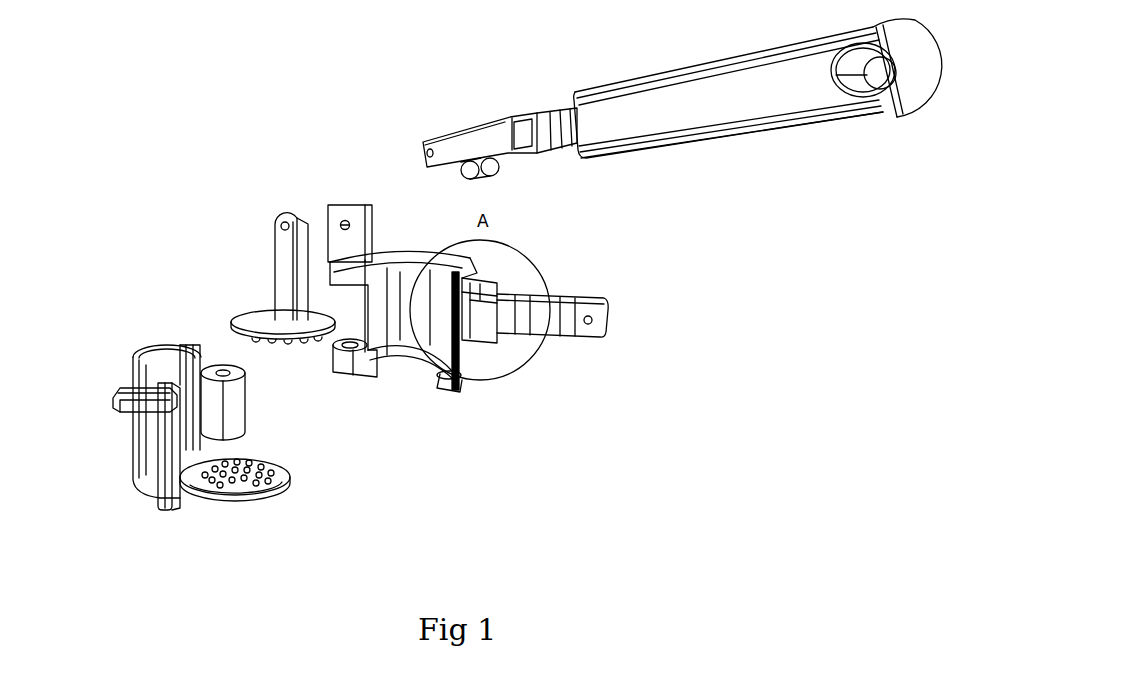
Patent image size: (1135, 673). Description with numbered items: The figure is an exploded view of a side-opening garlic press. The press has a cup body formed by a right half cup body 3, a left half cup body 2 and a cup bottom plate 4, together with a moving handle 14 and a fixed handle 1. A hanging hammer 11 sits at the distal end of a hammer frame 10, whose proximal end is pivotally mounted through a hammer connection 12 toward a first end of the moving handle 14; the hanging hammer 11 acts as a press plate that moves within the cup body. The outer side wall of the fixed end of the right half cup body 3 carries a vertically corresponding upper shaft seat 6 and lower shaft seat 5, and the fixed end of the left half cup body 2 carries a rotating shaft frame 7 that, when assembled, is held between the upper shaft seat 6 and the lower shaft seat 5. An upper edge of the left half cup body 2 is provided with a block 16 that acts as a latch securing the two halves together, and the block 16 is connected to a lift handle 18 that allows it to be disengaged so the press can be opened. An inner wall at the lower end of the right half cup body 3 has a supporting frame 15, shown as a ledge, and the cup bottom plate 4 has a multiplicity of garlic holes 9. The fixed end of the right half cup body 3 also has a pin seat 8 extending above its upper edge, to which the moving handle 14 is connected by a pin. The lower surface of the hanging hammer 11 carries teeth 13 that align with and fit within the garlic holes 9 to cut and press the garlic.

The fixed handle 1 is at (575, 325).
The left half cup body 2 is at (168, 503).
The right half cup body 3 is at (467, 380).
The cup bottom plate 4 is at (255, 487).
The lower shaft seat 5 is at (346, 378).
The upper shaft seat 6 is at (328, 255).
The rotating shaft frame 7 is at (210, 365).
The pin seat 8 is at (350, 207).
The garlic holes 9 is at (278, 474).
The hammer frame 10 is at (283, 265).
The hanging hammer 11 is at (255, 318).
The hammer connection 12 is at (503, 175).
The teeth 13 is at (279, 342).
The moving handle 14 is at (730, 103).
The supporting frame 15 is at (443, 390).
The block 16 is at (152, 462).
The lift handle 18 is at (120, 405).